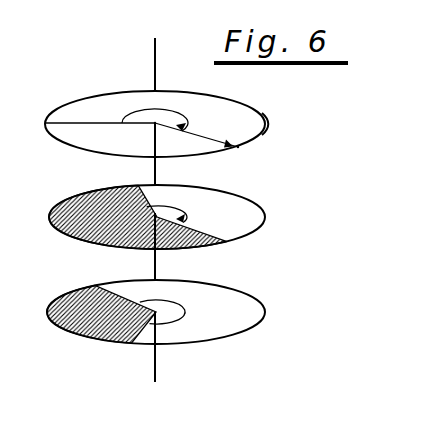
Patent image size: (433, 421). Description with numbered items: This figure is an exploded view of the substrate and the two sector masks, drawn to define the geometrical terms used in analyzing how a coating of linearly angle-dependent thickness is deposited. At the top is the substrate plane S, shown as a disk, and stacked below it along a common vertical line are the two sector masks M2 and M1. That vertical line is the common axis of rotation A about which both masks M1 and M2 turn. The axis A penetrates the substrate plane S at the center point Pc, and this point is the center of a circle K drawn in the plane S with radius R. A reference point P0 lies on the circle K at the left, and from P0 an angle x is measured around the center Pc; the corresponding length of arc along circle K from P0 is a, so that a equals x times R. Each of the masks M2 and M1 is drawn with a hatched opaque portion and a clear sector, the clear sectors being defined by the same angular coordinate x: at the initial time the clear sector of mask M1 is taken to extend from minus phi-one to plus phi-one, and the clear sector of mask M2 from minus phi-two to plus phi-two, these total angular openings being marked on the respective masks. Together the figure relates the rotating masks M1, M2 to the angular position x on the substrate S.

The common axis of rotation A is at (155, 47).
The substrate plane S is at (223, 97).
The circle K is at (264, 125).
The point P0 is at (90, 124).
The center point Pc is at (147, 132).
The radius R is at (196, 137).
The arc length a is at (244, 150).
The angle x is at (159, 120).
The sector mask M2 is at (227, 198).
The sector mask M1 is at (225, 285).